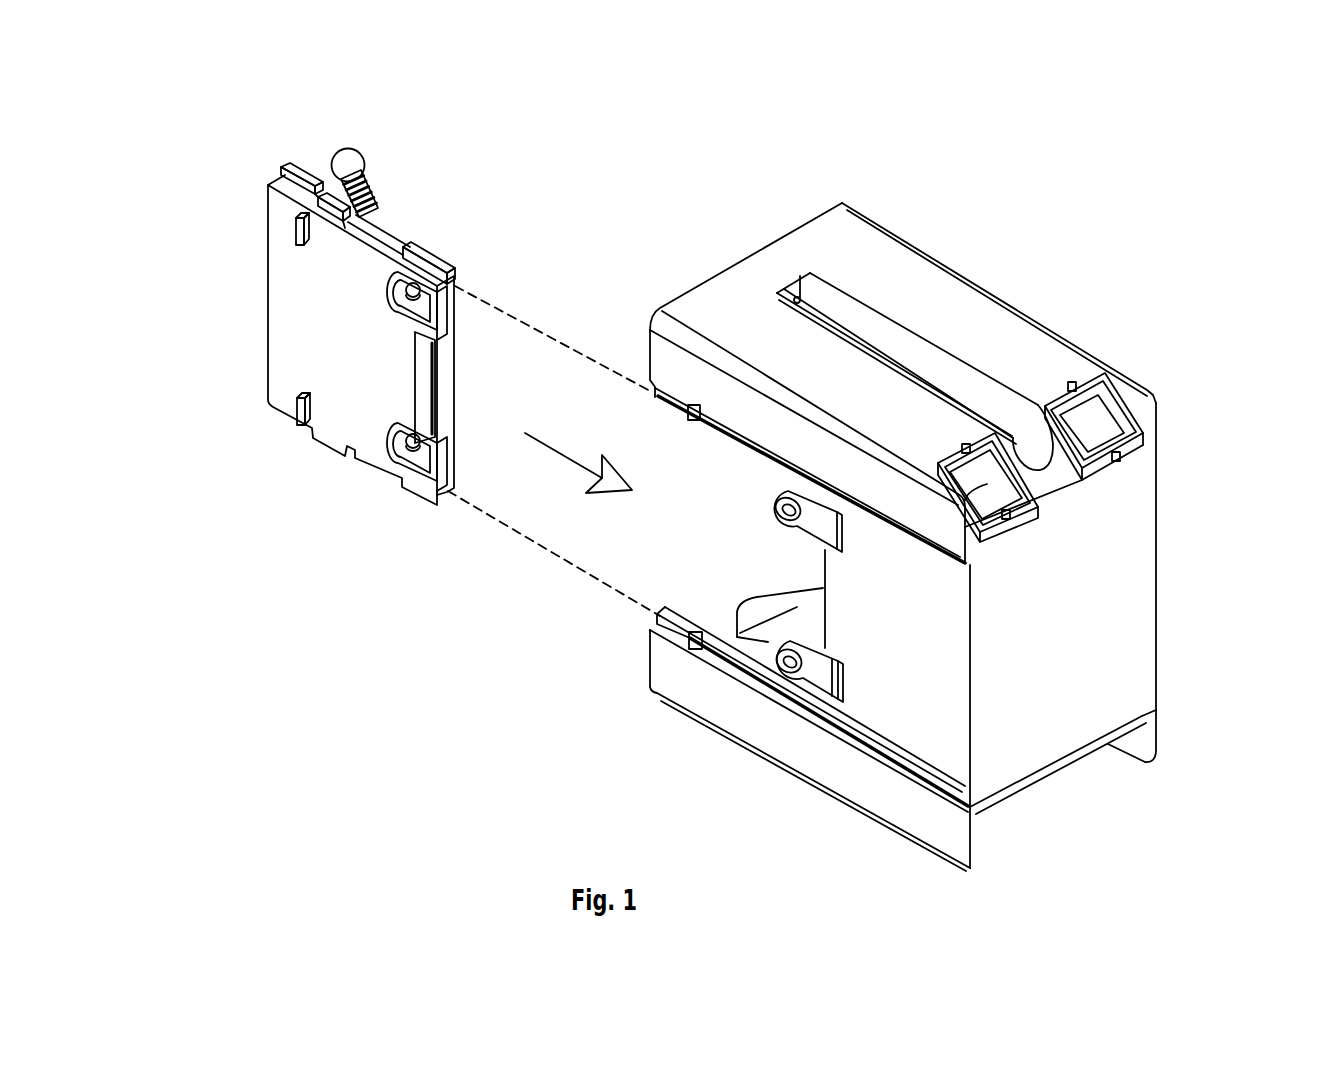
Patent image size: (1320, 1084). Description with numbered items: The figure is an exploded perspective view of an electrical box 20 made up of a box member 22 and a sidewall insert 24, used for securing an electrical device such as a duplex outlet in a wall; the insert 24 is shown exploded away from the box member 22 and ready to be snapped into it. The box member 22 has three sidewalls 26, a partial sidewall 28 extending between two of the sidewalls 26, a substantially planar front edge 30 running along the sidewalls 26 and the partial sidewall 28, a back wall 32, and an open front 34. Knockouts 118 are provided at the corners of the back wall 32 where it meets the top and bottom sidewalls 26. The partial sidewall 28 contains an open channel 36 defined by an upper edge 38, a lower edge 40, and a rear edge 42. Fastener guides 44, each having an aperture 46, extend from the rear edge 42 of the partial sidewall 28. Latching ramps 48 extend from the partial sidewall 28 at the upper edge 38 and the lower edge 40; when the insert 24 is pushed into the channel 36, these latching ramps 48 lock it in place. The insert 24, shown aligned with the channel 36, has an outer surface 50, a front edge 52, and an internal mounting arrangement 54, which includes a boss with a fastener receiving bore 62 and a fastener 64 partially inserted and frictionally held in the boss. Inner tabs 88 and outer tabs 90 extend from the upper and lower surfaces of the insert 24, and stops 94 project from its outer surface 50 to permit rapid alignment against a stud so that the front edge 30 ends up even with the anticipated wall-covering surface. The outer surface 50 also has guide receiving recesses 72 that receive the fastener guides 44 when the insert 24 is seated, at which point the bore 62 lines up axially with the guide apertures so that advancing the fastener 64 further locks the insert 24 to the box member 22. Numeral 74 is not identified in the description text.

The electrical box 20 is at (387, 724).
The box member 22 is at (1031, 262).
The sidewall insert 24 is at (220, 270).
The sidewalls 26 is at (906, 310).
The partial sidewall 28 is at (822, 472).
The front edge 30 is at (742, 262).
The back wall 32 is at (1051, 630).
The open front 34 is at (640, 443).
The open channel 36 is at (682, 532).
The upper edge 38 is at (737, 440).
The lower edge 40 is at (673, 640).
The rear edge 42 is at (825, 573).
The fastener guide 44 is at (843, 530).
The aperture 46 is at (792, 667).
The latching ramps 48 is at (697, 405).
The outer surface 50 is at (325, 347).
The front edge 52 is at (443, 370).
The internal mounting arrangement 54 is at (413, 139).
The fastener receiving bore 62 is at (418, 285).
The fastener 64 is at (352, 148).
The guide receiving recesses 72 is at (436, 300).
The rear wall 74 is at (930, 610).
The inner tabs 88 is at (304, 155).
The outer tabs 90 is at (325, 213).
The stops 94 is at (295, 232).
The knockout 118 is at (1088, 423).